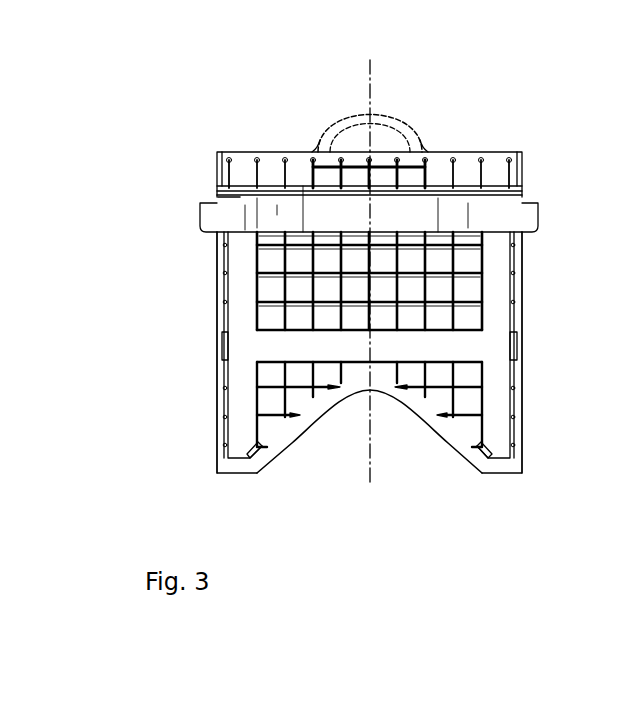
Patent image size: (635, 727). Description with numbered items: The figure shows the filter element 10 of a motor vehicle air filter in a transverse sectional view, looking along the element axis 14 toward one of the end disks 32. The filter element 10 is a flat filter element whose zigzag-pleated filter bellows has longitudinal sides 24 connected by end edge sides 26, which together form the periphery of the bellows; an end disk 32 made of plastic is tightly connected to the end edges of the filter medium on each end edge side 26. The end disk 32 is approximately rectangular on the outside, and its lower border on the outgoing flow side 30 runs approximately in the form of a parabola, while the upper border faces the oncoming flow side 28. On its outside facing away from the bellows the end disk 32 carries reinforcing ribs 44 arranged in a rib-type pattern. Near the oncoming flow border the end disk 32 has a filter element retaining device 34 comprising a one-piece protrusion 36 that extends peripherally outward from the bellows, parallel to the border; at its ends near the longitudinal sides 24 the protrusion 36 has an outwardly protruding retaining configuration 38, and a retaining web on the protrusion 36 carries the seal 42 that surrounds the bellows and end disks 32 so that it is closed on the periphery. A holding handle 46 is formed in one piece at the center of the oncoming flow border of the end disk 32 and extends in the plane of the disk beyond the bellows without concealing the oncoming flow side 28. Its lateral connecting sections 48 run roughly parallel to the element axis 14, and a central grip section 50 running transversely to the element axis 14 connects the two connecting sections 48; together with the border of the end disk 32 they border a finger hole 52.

The filter element 10 is at (170, 103).
The element axis 14 is at (367, 452).
The longitudinal sides 24 is at (215, 352).
The end edge sides 26 is at (470, 358).
The oncoming flow side 28 is at (262, 153).
The outgoing flow side 30 is at (345, 403).
The end disk 32 is at (242, 452).
The filter element retaining device 34 is at (212, 195).
The protrusion 36 is at (462, 197).
The retaining configuration 38 is at (204, 203).
The seal 42 is at (240, 213).
The reinforcing ribs 44 is at (438, 387).
The holding handle 46 is at (408, 127).
The lateral connecting sections 48 is at (330, 150).
The central grip section 50 is at (380, 120).
The finger hole 52 is at (353, 136).